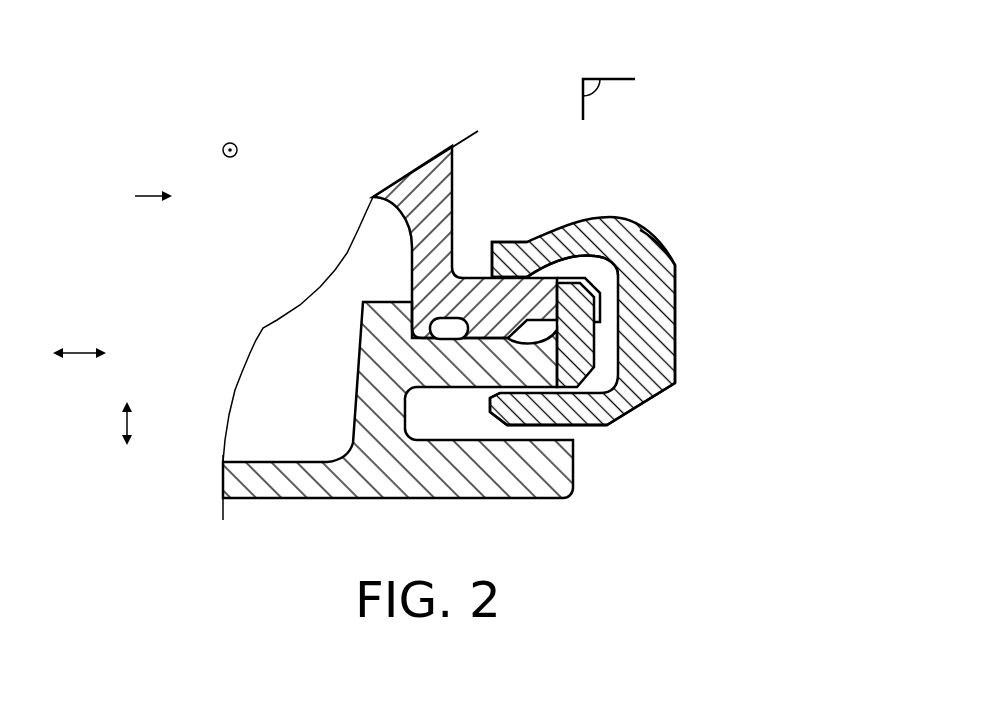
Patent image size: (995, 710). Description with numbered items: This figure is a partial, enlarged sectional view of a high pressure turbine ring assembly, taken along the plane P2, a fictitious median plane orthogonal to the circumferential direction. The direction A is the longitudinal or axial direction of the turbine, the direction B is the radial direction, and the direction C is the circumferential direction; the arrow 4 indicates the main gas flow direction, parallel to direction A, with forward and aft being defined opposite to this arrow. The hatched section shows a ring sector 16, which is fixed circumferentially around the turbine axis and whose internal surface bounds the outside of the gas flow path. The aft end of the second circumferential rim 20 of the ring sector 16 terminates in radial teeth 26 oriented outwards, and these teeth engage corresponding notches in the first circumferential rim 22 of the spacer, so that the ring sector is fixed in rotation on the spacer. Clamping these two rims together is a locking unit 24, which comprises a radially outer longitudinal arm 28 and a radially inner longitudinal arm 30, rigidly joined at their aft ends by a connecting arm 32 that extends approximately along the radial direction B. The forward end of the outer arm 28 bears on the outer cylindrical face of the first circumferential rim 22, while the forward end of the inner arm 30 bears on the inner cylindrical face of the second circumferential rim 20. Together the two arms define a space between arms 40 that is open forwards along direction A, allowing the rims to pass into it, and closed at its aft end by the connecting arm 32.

The arrow 4 is at (157, 192).
The ring sector 16 is at (305, 485).
The second circumferential rim 20 is at (605, 420).
The first circumferential rim 22 is at (543, 292).
The locking unit 24 is at (642, 206).
The radial teeth 26 is at (578, 305).
The radially outer longitudinal arm 28 is at (510, 243).
The radially inner longitudinal arm 30 is at (572, 412).
The connecting arm 32 is at (648, 258).
The space between arms 40 is at (593, 263).
The direction A is at (80, 350).
The direction B is at (130, 420).
The direction C is at (237, 148).
The plane P2 is at (593, 80).